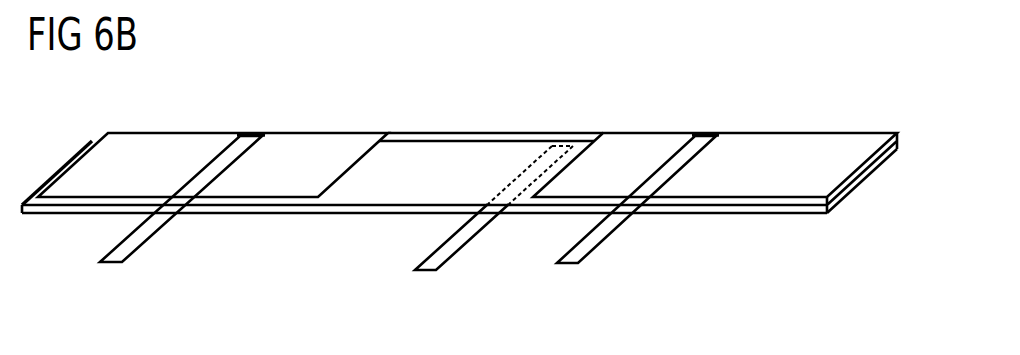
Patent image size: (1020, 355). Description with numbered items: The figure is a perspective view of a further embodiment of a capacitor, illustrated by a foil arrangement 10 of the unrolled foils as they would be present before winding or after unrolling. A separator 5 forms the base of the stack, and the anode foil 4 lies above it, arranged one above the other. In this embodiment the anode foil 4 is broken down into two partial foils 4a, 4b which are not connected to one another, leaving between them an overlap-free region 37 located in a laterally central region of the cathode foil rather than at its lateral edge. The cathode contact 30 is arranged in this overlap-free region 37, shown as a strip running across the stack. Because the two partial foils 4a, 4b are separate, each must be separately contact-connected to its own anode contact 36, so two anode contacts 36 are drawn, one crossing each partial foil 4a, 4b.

The foil arrangement 10 is at (810, 88).
The separator 5 is at (294, 203).
The partial foil 4a is at (137, 152).
The anode foil 4 is at (300, 152).
The partial foil 4b is at (642, 150).
The overlap-free region 37 is at (601, 124).
The anode contact 36 is at (124, 245).
The cathode contact 30 is at (446, 245).